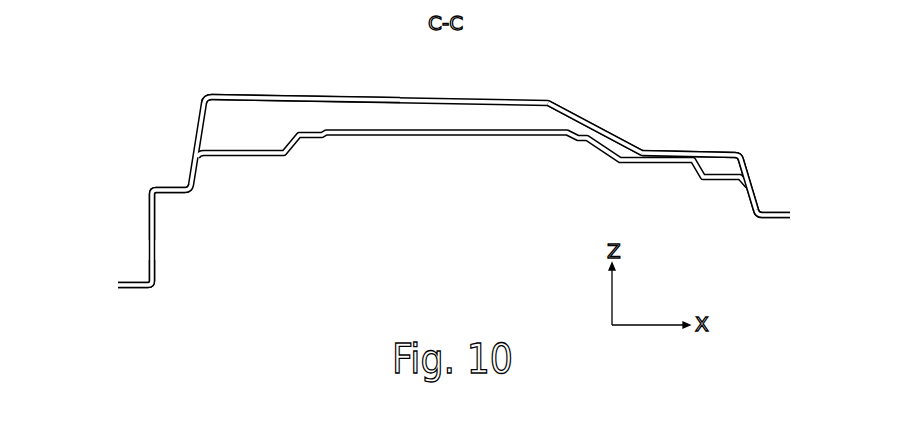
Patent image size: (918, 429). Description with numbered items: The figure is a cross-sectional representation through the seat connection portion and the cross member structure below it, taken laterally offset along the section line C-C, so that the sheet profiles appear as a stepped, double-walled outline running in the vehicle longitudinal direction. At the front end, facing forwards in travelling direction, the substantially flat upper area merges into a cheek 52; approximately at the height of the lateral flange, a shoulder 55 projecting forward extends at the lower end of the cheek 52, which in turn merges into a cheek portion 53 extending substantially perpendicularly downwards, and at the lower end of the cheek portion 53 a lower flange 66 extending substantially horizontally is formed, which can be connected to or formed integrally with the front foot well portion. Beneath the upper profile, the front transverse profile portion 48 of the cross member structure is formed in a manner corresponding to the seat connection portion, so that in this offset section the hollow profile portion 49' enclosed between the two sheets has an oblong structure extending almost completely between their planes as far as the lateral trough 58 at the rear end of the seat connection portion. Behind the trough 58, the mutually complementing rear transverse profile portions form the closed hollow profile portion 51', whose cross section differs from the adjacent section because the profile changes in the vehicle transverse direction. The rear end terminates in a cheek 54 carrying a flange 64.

The front transverse profile portion 48 is at (269, 182).
The hollow profile portion 49' is at (316, 72).
The hollow profile portion 51' is at (688, 123).
The cheek 52 is at (205, 103).
The cheek portion 53 is at (143, 210).
The cheek 54 is at (747, 170).
The shoulder 55 is at (160, 187).
The trough 58 is at (641, 129).
The flange 64 is at (782, 215).
The lower flange 66 is at (128, 279).